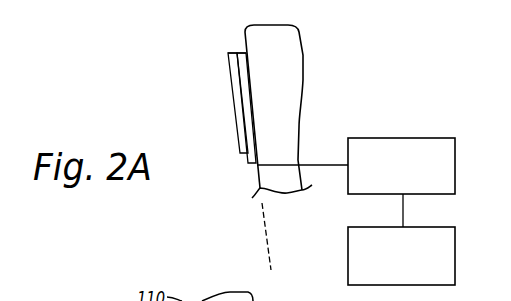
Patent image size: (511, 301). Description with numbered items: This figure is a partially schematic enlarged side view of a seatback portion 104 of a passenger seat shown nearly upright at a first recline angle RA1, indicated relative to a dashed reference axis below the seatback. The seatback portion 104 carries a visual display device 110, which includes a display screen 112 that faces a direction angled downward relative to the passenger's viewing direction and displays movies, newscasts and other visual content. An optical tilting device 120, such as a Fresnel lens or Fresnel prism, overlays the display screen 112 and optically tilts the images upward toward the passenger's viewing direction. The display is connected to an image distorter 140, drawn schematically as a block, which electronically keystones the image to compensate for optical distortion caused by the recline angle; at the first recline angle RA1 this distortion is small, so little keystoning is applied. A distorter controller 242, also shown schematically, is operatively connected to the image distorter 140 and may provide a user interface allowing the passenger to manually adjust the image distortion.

The seatback portion 104 is at (303, 68).
The visual display device 110 is at (241, 52).
The optical tilting device 120 is at (233, 74).
The display screen 112 is at (242, 102).
The image distorter 140 is at (425, 137).
The distorter controller 242 is at (425, 227).
The first recline angle RA1 is at (271, 239).